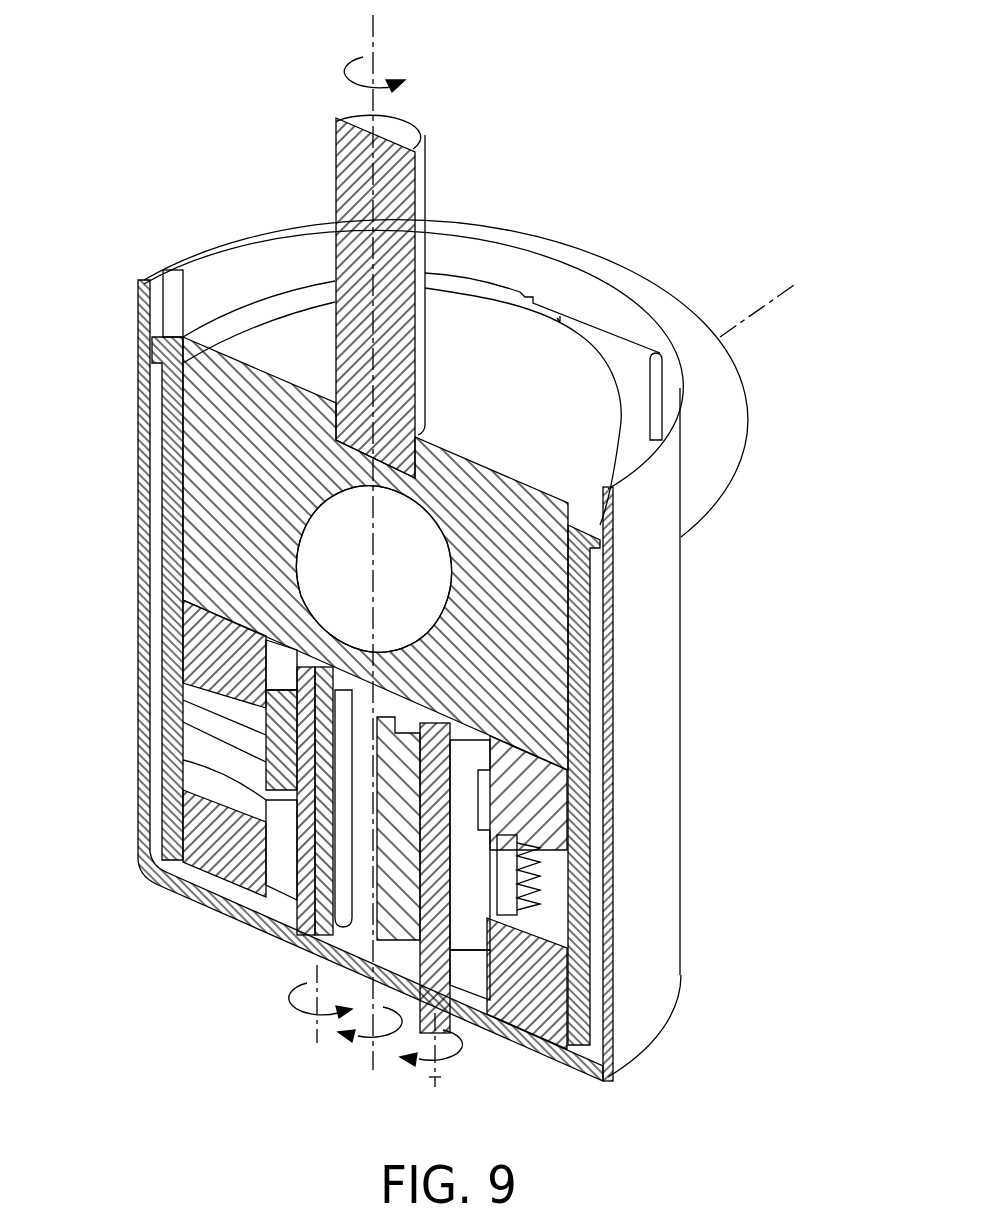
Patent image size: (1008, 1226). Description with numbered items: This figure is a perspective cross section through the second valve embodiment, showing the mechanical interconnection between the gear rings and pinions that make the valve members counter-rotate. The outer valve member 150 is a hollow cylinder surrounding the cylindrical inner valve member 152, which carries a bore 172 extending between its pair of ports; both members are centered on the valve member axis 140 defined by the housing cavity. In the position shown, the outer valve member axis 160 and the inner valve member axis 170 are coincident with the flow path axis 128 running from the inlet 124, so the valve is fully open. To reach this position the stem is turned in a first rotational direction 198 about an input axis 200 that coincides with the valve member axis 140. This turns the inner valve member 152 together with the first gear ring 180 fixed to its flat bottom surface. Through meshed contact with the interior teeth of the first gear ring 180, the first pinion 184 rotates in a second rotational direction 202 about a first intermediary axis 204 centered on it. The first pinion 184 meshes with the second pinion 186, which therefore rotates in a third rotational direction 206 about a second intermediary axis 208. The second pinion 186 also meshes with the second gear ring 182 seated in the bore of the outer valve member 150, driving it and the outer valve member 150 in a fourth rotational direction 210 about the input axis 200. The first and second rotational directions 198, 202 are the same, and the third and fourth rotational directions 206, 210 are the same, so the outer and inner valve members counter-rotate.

The inlet 124 is at (723, 470).
The flow path axis 128 is at (763, 308).
The valve member axis 140 is at (373, 30).
The outer valve member 150 is at (592, 547).
The inner valve member 152 is at (553, 713).
The outer valve member axis 160 is at (729, 330).
The inner valve member axis 170 is at (803, 280).
The bore 172 is at (343, 546).
The first gear ring 180 is at (192, 646).
The second gear ring 182 is at (553, 975).
The first pinion 184 is at (265, 746).
The second pinion 186 is at (472, 900).
The first rotational direction 198 is at (386, 78).
The input axis 200 is at (377, 100).
The second rotational direction 202 is at (298, 1012).
The first intermediary axis 204 is at (315, 965).
The third rotational direction 206 is at (455, 1058).
The second intermediary axis 208 is at (435, 1078).
The fourth rotational direction 210 is at (365, 1040).